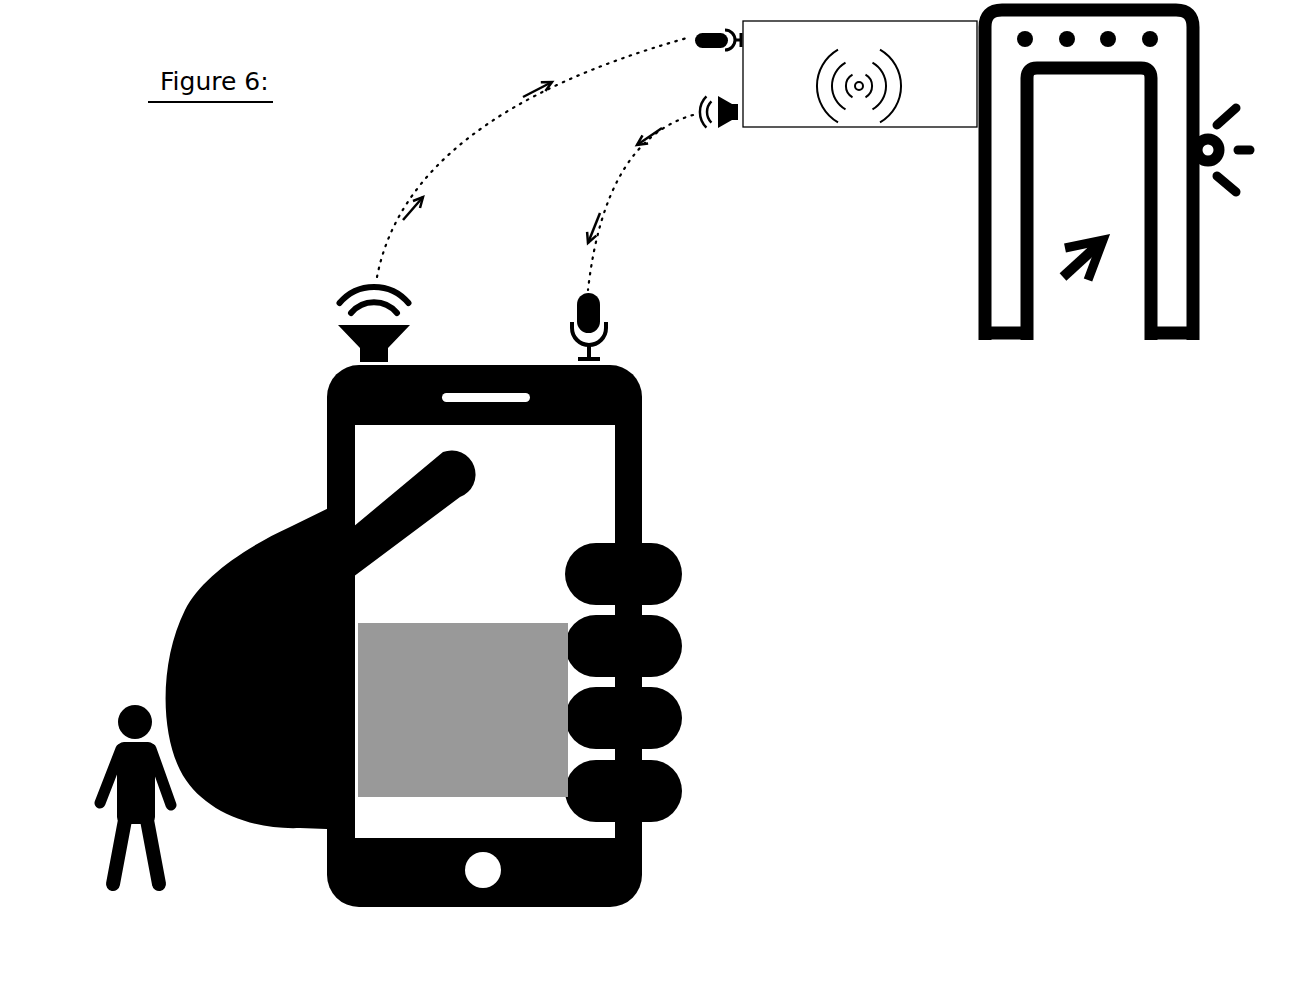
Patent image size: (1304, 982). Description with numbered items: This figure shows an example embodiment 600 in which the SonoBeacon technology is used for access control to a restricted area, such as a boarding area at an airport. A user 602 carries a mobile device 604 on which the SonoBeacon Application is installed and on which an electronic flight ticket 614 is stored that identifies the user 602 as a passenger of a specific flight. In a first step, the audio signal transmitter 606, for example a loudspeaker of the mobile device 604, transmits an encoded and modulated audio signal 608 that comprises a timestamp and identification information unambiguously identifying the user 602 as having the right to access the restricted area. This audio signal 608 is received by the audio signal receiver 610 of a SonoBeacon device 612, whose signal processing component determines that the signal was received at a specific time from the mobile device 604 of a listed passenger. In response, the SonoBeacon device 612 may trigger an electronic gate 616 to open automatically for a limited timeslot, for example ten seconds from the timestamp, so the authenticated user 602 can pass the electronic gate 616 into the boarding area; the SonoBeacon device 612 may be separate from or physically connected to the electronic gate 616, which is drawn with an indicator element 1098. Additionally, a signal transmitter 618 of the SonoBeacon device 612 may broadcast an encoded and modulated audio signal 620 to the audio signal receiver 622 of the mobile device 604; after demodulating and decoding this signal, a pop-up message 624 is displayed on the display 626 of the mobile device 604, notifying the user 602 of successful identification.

The example embodiment 600 is at (205, 168).
The user 602 is at (135, 815).
The mobile device 604 is at (504, 636).
The audio signal transmitter 606 is at (359, 324).
The audio signal 608 is at (532, 157).
The audio signal receiver 610 is at (718, 51).
The SonoBeacon device 612 is at (860, 74).
The electronic flight ticket 614 is at (516, 521).
The electronic gate 616 is at (1089, 175).
The signal transmitter 618 is at (719, 124).
The audio signal 620 is at (640, 202).
The audio signal receiver 622 is at (574, 326).
The pop-up message 624 is at (463, 710).
The display 626 is at (485, 631).
The indicator light of security gate 1098 is at (1234, 150).